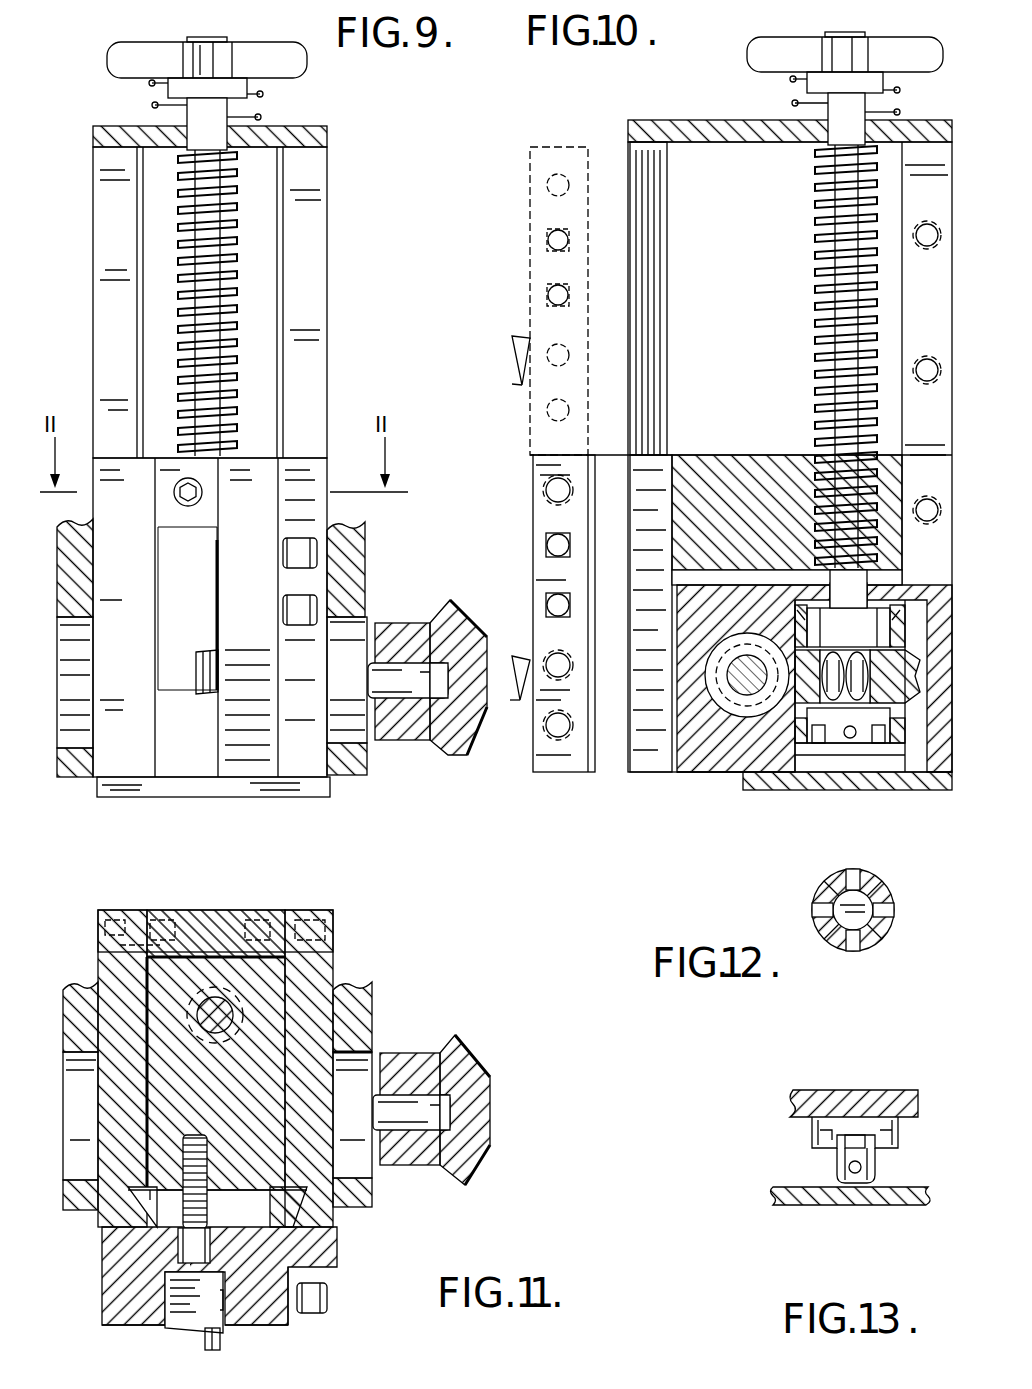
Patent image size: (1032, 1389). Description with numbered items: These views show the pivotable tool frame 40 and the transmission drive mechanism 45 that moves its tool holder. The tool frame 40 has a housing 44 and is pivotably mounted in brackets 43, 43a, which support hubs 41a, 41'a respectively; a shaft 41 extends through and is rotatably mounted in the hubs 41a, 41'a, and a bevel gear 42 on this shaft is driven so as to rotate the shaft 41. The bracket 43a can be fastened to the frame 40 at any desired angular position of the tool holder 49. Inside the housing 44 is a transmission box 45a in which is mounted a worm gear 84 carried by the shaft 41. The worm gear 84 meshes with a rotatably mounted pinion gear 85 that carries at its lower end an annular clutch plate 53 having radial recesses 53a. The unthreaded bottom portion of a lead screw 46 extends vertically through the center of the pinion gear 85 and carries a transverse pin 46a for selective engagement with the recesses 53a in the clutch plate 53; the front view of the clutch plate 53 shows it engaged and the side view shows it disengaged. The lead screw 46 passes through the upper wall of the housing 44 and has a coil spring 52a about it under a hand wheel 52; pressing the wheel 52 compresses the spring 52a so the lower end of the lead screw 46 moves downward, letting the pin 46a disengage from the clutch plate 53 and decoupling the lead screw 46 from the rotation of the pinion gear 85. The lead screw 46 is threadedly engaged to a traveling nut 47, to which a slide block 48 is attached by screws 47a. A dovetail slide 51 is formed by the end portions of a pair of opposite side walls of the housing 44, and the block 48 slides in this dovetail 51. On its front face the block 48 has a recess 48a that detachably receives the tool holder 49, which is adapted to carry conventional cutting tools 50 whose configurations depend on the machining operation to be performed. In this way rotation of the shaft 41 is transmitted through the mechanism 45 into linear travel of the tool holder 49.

In FIG. 9, the pivotable tool frame 40 is at (342, 251).
In FIG. 10, the pivotable tool frame 40 is at (686, 104).
In FIG. 11, the pivotable tool frame 40 is at (363, 941).
In FIG. 9, the shaft 41 is at (408, 699).
In FIG. 10, the shaft 41 is at (741, 731).
In FIG. 11, the shaft 41 is at (411, 1125).
In FIG. 9, the hub 41a is at (355, 620).
In FIG. 11, the hub 41a is at (358, 1065).
In FIG. 9, the hub 41'a is at (107, 663).
In FIG. 9, the bevel gear 42 is at (462, 745).
In FIG. 11, the bevel gear 42 is at (470, 1068).
In FIG. 9, the bracket 43 is at (362, 548).
In FIG. 11, the bracket 43 is at (362, 1005).
In FIG. 9, the bracket 43a is at (86, 792).
In FIG. 11, the bracket 43a is at (80, 1000).
In FIG. 9, the housing 44 is at (320, 133).
In FIG. 10, the housing 44 is at (642, 124).
In FIG. 11, the housing 44 is at (322, 912).
In FIG. 13, the housing 44 is at (842, 1200).
In FIG. 10, the transmission drive mechanism 45 is at (889, 762).
In FIG. 10, the transmission box 45a is at (685, 752).
In FIG. 9, the lead screw 46 is at (222, 282).
In FIG. 10, the lead screw 46 is at (815, 248).
In FIG. 11, the lead screw 46 is at (215, 1000).
In FIG. 12, the lead screw 46 is at (895, 910).
In FIG. 13, the lead screw 46 is at (837, 1166).
In FIG. 10, the transverse pin 46a is at (850, 742).
In FIG. 12, the transverse pin 46a is at (852, 870).
In FIG. 13, the transverse pin 46a is at (862, 1167).
In FIG. 10, the traveling nut 47 is at (732, 455).
In FIG. 11, the traveling nut 47 is at (272, 990).
In FIG. 9, the screws 47a is at (203, 492).
In FIG. 11, the screws 47a is at (182, 1245).
In FIG. 9, the slide block 48 is at (264, 695).
In FIG. 10, the slide block 48 is at (535, 252).
In FIG. 11, the slide block 48 is at (130, 1315).
In FIG. 9, the recess 48a is at (208, 790).
In FIG. 11, the recess 48a is at (232, 1325).
In FIG. 9, the tool holder 49 is at (199, 615).
In FIG. 10, the tool holder 49 is at (518, 335).
In FIG. 11, the tool holder 49 is at (188, 1320).
In FIG. 9, the cutting tools 50 is at (205, 692).
In FIG. 10, the cutting tools 50 is at (520, 372).
In FIG. 11, the cutting tools 50 is at (220, 1345).
In FIG. 10, the dovetail slide 51 is at (660, 352).
In FIG. 11, the dovetail slide 51 is at (150, 1200).
In FIG. 9, the hand wheel 52 is at (114, 50).
In FIG. 10, the hand wheel 52 is at (768, 47).
In FIG. 9, the coil spring 52a is at (152, 106).
In FIG. 10, the coil spring 52a is at (792, 104).
In FIG. 10, the clutch plate 53 is at (833, 732).
In FIG. 12, the clutch plate 53 is at (812, 910).
In FIG. 13, the clutch plate 53 is at (818, 1130).
In FIG. 13, the radial recesses 53a is at (855, 1140).
In FIG. 10, the worm gear 84 is at (735, 702).
In FIG. 10, the pinion gear 85 is at (924, 590).
In FIG. 13, the pinion gear 85 is at (818, 1097).